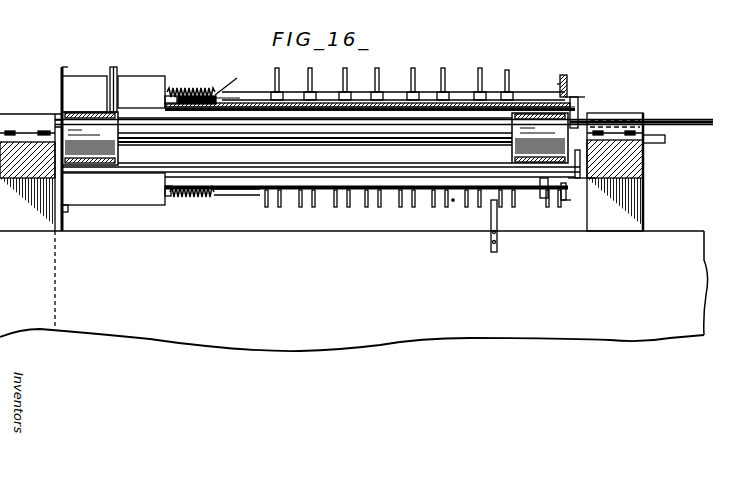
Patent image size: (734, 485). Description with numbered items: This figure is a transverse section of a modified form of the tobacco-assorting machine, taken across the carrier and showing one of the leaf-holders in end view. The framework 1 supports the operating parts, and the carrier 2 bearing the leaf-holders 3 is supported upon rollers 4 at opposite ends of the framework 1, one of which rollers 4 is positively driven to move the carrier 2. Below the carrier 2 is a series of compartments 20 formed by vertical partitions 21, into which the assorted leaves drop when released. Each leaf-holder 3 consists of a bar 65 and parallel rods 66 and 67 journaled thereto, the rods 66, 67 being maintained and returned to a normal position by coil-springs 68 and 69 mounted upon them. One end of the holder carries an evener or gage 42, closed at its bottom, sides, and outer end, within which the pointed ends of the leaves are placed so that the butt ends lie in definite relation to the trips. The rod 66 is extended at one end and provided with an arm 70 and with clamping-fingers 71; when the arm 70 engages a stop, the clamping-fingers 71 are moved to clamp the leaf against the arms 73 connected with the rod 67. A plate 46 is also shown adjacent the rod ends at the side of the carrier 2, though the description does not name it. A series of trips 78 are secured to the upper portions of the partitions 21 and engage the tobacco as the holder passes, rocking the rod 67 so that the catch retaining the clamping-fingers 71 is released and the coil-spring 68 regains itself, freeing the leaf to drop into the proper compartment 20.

The framework 1 is at (332, 160).
The carrier 2 is at (83, 115).
The leaf-holders 3 is at (390, 138).
The rollers 4 is at (560, 128).
The compartments 20 is at (354, 291).
The vertical partitions 21 is at (252, 222).
The evener or gage 42 is at (141, 76).
The plate 46 is at (557, 85).
The bar 65 is at (317, 107).
The rod 66 is at (417, 103).
The rod 67 is at (453, 88).
The coil-spring 68 is at (214, 80).
The coil-spring 69 is at (195, 90).
The arm 70 is at (590, 102).
The clamping-fingers 71 is at (376, 90).
The arms 73 is at (341, 72).
The trips 78 is at (492, 210).